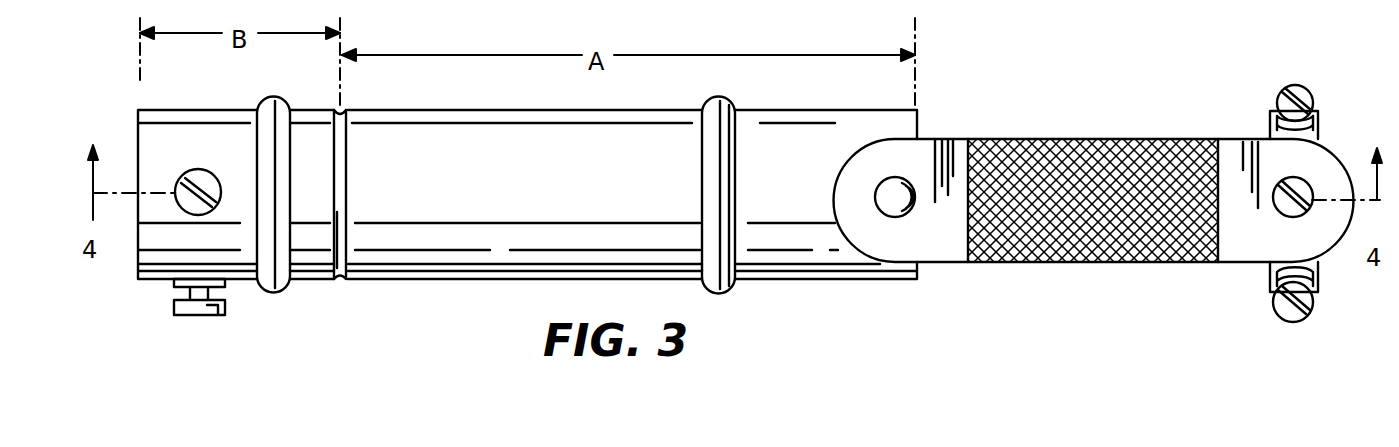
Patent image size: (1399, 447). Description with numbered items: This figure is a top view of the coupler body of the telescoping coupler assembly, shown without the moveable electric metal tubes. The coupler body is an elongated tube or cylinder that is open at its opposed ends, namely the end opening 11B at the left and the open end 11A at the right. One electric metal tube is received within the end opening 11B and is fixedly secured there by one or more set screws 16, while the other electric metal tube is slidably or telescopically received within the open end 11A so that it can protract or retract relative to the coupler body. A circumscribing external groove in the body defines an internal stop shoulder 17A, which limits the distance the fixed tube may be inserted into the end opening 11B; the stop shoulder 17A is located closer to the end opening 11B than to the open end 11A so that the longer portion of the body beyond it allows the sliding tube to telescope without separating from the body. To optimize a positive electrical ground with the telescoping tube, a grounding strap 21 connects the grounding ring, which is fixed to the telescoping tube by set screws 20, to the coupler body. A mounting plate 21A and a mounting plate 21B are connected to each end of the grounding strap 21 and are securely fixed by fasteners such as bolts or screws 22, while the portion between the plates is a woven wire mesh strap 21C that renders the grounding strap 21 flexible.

The open end of coupler body 11A is at (922, 123).
The end opening of coupler body 11B is at (138, 258).
The set screws 16 is at (198, 169).
The internal stop shoulder 17A is at (342, 108).
The set screws 20 is at (1282, 102).
The grounding strap 21 is at (1094, 211).
The mounting plate 21A is at (1243, 252).
The mounting plate 21B is at (928, 244).
The woven wire mesh strap 21C is at (1104, 172).
The screws 22 is at (894, 207).